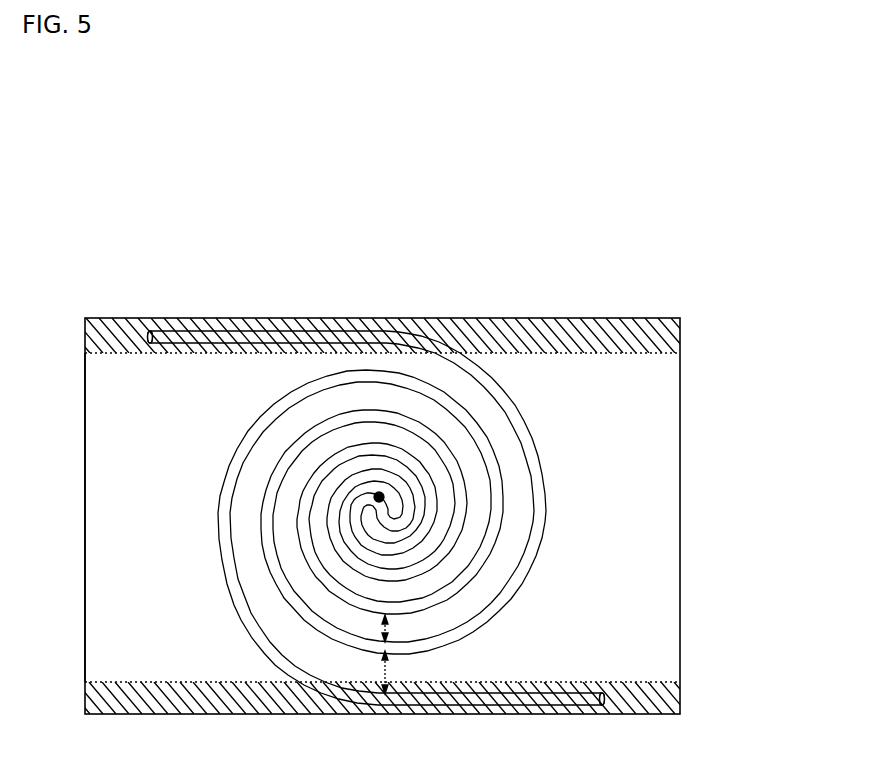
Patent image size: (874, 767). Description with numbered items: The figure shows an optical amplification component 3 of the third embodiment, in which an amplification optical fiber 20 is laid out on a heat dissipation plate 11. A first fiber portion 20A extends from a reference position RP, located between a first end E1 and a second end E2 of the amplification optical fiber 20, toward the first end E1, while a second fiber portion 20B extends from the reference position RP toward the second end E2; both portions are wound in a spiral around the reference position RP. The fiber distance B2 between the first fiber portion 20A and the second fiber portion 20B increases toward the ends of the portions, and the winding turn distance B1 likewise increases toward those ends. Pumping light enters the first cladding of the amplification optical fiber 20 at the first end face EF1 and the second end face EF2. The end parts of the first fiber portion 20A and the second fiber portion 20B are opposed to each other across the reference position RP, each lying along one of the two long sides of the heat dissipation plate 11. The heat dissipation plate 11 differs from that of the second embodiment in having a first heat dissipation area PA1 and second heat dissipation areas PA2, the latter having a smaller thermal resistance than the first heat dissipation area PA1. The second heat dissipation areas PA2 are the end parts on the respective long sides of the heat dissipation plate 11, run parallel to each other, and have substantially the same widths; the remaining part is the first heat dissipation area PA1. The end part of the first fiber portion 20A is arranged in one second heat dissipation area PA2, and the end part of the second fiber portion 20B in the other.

The optical amplification component 3 is at (704, 165).
The heat dissipation plate 11 is at (598, 320).
The amplification optical fiber 20 is at (411, 487).
The first fiber portion 20A is at (524, 694).
The second fiber portion 20B is at (541, 520).
The first end E1 is at (601, 676).
The second end E2 is at (151, 357).
The first end face EF1 is at (605, 700).
The second end face EF2 is at (149, 334).
The first heat dissipation area PA1 is at (115, 528).
The second heat dissipation areas PA2 is at (652, 356).
The reference position RP is at (376, 497).
The winding turn distance B1 is at (388, 626).
The fiber distance B2 is at (388, 683).